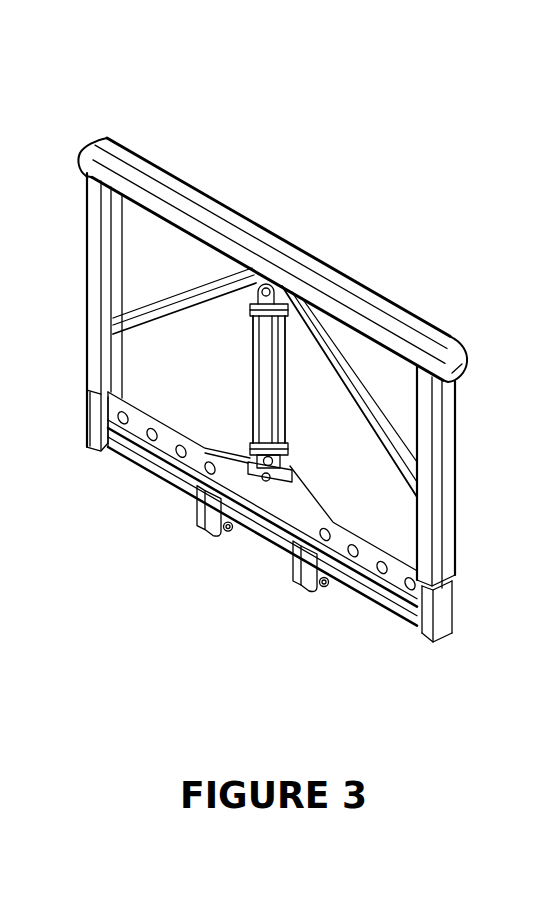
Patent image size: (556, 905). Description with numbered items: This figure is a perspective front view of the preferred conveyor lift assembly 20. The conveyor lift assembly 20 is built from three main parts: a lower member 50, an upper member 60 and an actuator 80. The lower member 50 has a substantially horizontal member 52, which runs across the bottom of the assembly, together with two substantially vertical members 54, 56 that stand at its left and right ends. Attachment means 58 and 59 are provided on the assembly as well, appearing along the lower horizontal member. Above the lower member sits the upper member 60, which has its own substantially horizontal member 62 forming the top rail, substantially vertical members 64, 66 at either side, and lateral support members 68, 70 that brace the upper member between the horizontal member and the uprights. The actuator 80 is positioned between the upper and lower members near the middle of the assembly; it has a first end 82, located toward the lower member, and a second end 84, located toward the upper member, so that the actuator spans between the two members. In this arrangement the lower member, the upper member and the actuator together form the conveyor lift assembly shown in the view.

The conveyor lift assembly 20 is at (284, 393).
The lower member 50 is at (284, 564).
The substantially horizontal member 52 is at (152, 473).
The substantially vertical member 54 is at (92, 448).
The substantially vertical member 56 is at (455, 620).
The attachment means 58 is at (212, 527).
The attachment means 59 is at (322, 588).
The upper member 60 is at (284, 363).
The substantially horizontal member 62 is at (405, 309).
The substantially vertical member 64 is at (87, 232).
The substantially vertical member 66 is at (458, 550).
The lateral support member 68 is at (162, 293).
The lateral support member 70 is at (394, 427).
The actuator 80 is at (244, 380).
The first end 82 is at (278, 493).
The second end 84 is at (253, 283).